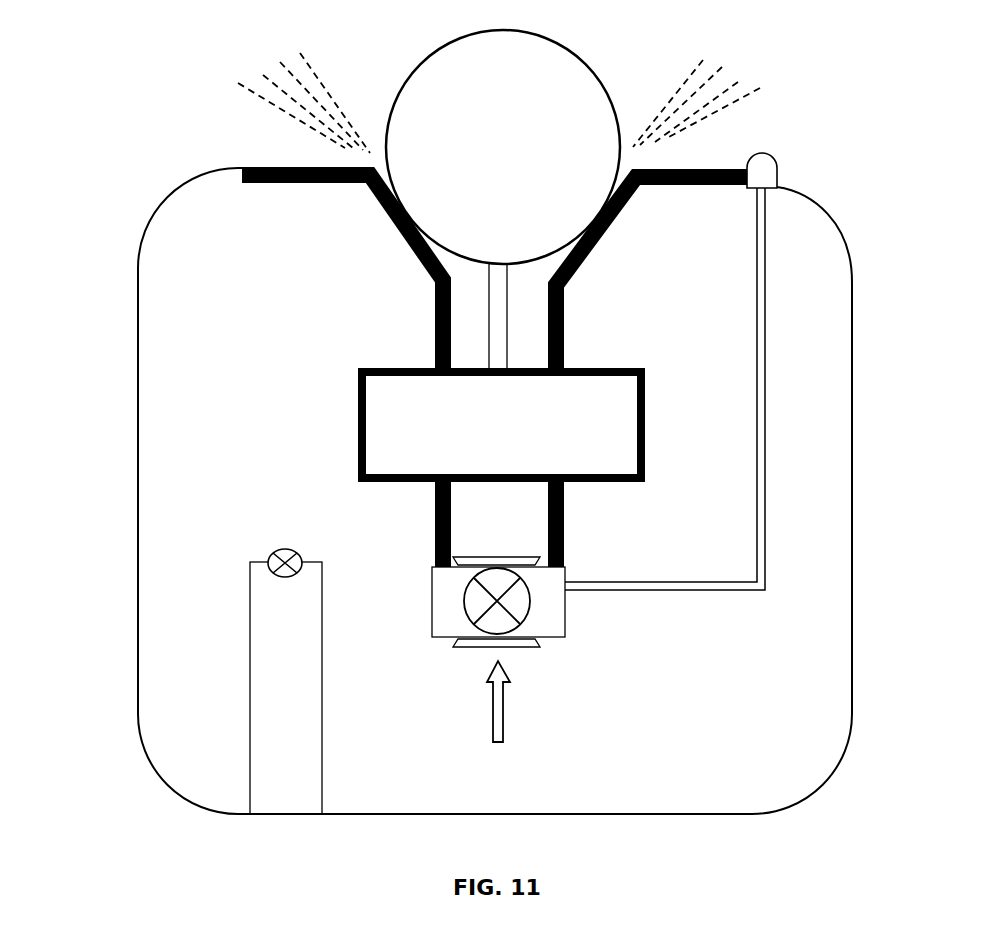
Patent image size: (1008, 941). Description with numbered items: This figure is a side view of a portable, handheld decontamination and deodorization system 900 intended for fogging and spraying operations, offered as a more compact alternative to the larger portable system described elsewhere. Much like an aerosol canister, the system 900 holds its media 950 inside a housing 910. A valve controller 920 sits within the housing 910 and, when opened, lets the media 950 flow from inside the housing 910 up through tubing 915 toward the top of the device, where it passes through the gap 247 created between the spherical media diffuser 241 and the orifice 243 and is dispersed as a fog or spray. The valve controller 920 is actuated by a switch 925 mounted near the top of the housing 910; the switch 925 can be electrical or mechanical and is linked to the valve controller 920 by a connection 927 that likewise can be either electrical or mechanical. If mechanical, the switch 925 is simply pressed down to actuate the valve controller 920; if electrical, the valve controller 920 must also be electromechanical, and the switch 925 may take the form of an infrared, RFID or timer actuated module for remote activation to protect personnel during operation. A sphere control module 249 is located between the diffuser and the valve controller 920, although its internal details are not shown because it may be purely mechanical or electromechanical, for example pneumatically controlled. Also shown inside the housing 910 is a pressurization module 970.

The portable decontamination and deodorization system 900 is at (160, 144).
The housing 910 is at (153, 410).
The tubing 915 is at (437, 520).
The valve controller 920 is at (437, 600).
The switch 925 is at (772, 163).
The connection 927 is at (693, 586).
The media 950 is at (502, 719).
The pressurization module 970 is at (258, 574).
The spherical media diffuser 241 is at (600, 75).
The orifice 243 is at (338, 184).
The gap 247 is at (453, 268).
The sphere control module 249 is at (603, 368).